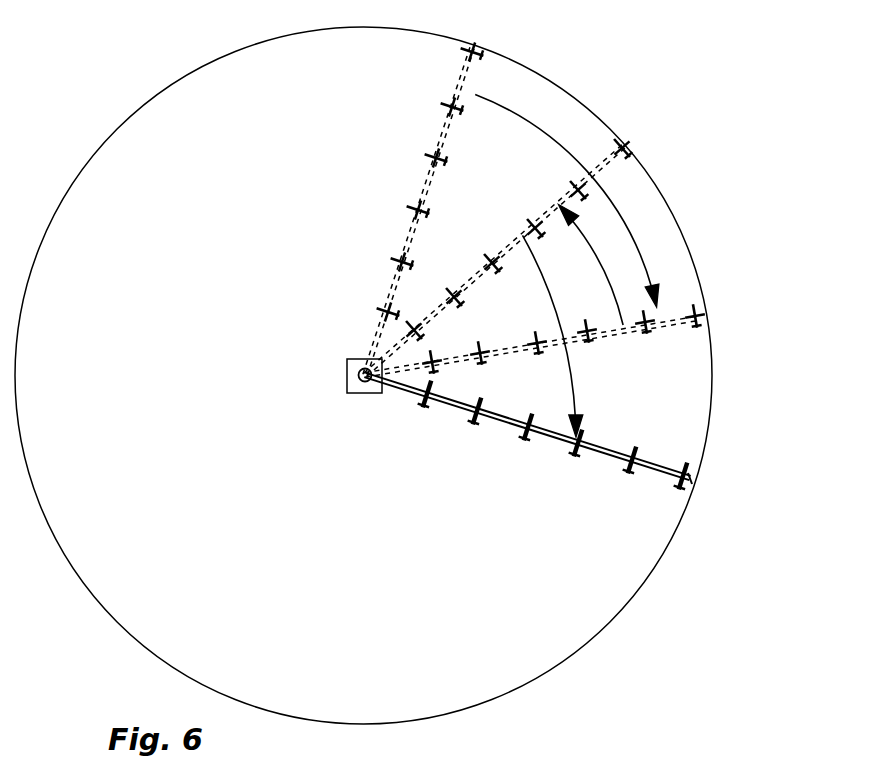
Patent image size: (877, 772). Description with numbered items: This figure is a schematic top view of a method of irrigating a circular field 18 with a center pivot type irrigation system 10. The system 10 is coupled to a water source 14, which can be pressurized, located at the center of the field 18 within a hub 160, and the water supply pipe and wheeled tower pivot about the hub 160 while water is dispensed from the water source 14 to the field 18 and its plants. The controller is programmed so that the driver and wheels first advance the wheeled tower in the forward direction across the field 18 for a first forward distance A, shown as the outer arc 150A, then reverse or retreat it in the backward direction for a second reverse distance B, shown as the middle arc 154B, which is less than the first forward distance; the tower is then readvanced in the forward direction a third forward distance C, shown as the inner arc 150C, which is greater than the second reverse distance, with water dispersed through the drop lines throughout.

The field 18 is at (162, 533).
The hub 160 is at (355, 358).
The water source 14 is at (360, 386).
The irrigation system 10 is at (657, 478).
The forward direction for first forward distance A 150A is at (537, 118).
The reverse direction for second reverse distance B 154B is at (607, 270).
The forward direction for third forward distance C 150C is at (573, 380).